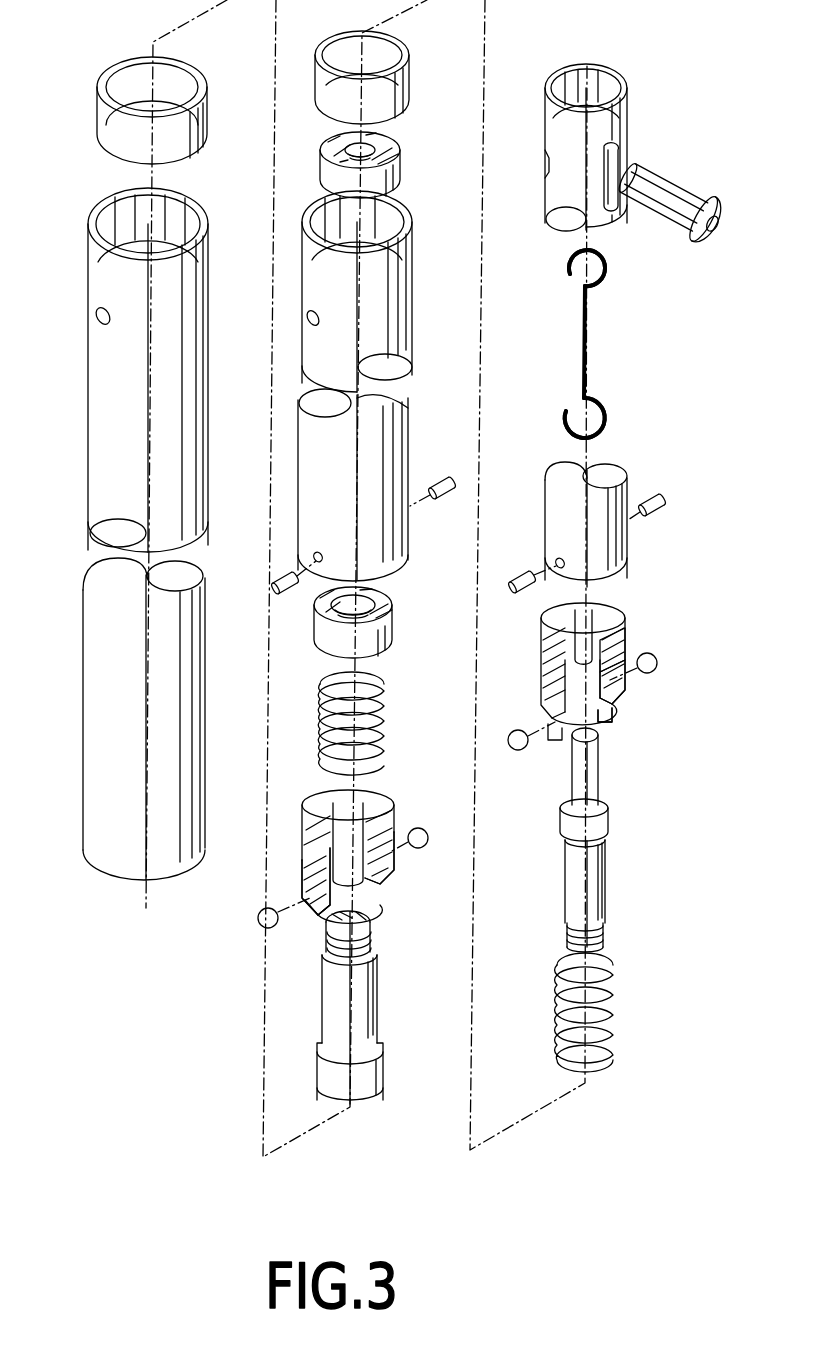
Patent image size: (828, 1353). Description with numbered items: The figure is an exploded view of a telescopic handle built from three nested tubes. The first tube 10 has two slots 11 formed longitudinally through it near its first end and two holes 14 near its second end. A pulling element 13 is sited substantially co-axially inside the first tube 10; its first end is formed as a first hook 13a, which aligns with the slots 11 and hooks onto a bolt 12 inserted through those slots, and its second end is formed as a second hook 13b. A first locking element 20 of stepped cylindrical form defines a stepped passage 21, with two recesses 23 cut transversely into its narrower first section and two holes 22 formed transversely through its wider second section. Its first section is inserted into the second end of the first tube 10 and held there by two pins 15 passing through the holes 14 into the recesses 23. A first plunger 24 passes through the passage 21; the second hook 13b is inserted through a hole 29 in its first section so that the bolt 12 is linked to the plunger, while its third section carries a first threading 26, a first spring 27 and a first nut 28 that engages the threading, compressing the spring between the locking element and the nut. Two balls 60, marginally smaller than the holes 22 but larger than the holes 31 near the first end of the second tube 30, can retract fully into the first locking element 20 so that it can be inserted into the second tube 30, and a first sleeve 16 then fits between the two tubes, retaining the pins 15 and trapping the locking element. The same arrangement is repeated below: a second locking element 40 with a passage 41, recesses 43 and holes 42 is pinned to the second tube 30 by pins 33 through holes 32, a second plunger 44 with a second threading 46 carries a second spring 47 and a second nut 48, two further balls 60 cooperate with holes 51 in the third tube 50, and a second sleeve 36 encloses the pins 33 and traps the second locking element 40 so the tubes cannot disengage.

The first tube 10 is at (628, 118).
The slots 11 is at (614, 166).
The bolt 12 is at (660, 168).
The pulling element 13 is at (590, 322).
The first hook 13a is at (605, 270).
The second hook 13b is at (603, 414).
The holes 14 is at (561, 558).
The pins 15 is at (518, 598).
The first sleeve 16 is at (404, 52).
The first locking element 20 is at (618, 614).
The passage 21 is at (600, 720).
The holes 22 is at (618, 690).
The recesses 23 is at (606, 634).
The first plunger 24 is at (614, 868).
The first threading 26 is at (604, 940).
The first spring 27 is at (614, 1012).
The first nut 28 is at (402, 146).
The hole 29 is at (570, 760).
The second tube 30 is at (325, 332).
The holes 31 is at (309, 312).
The holes 32 is at (320, 552).
The pins 33 is at (289, 598).
The second sleeve 36 is at (205, 86).
The second locking element 40 is at (384, 792).
The passage 41 is at (360, 882).
The holes 42 is at (308, 922).
The recesses 43 is at (318, 848).
The second plunger 44 is at (392, 1012).
The second threading 46 is at (372, 938).
The second spring 47 is at (381, 722).
The second nut 48 is at (318, 642).
The third tube 50 is at (205, 496).
The holes 51 is at (97, 320).
The balls 60 is at (262, 928).